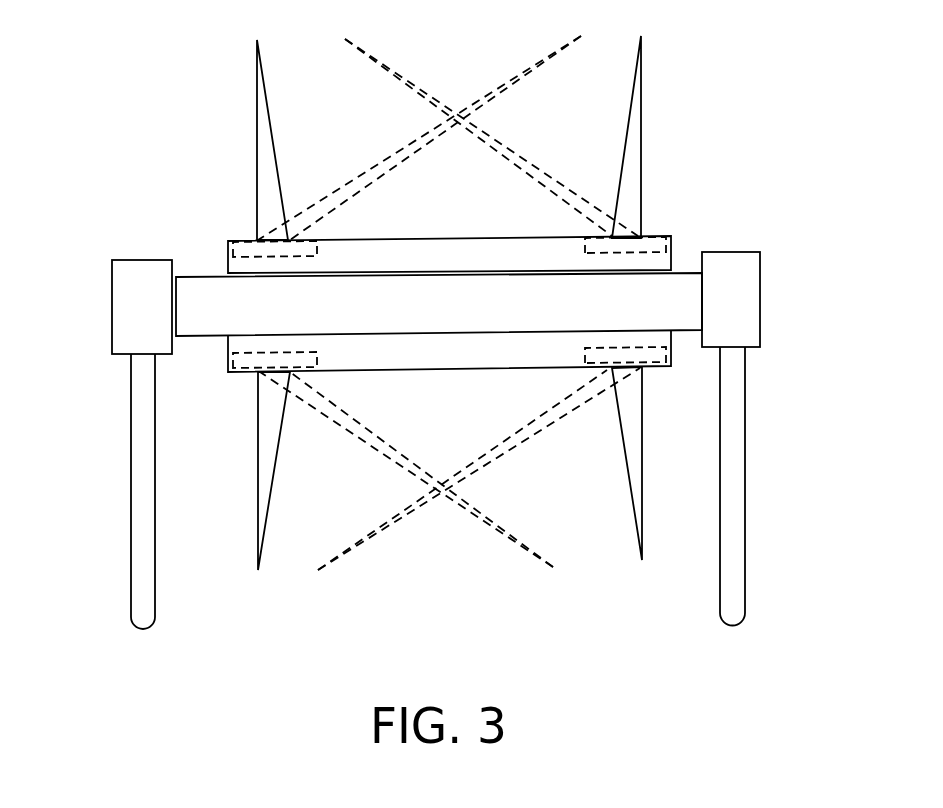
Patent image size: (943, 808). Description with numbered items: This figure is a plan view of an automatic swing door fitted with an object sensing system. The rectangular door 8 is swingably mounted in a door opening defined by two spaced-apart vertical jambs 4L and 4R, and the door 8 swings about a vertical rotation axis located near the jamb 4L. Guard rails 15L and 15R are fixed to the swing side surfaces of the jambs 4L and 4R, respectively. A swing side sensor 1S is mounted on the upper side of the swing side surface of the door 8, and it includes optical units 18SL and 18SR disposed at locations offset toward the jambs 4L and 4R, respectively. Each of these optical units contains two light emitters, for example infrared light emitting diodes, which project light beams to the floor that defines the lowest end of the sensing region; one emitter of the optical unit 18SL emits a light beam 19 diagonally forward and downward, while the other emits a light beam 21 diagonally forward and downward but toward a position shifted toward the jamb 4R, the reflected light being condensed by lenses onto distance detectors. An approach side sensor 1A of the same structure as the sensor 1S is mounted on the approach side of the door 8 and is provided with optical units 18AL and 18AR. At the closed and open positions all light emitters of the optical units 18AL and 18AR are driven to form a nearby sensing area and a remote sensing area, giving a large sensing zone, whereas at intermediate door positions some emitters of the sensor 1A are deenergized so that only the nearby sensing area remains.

The approach side sensor 1A is at (442, 257).
The swing side sensor 1S is at (358, 352).
The door 8 is at (677, 290).
The jamb 4L is at (126, 312).
The jamb 4R is at (743, 304).
The guard rail 15L is at (143, 609).
The guard rail 15R is at (730, 493).
The optical unit 18AR is at (248, 243).
The optical unit 18AL is at (642, 248).
The optical unit 18SL is at (253, 360).
The optical unit 18SR is at (650, 353).
The light beam 19 is at (267, 432).
The light beam 21 is at (345, 423).